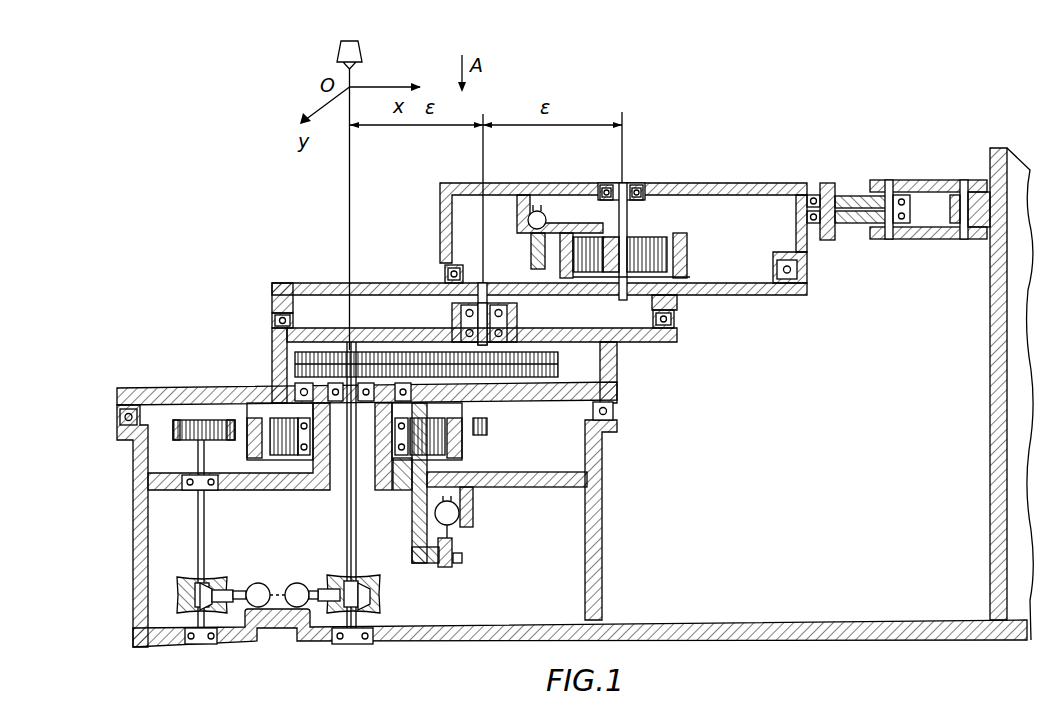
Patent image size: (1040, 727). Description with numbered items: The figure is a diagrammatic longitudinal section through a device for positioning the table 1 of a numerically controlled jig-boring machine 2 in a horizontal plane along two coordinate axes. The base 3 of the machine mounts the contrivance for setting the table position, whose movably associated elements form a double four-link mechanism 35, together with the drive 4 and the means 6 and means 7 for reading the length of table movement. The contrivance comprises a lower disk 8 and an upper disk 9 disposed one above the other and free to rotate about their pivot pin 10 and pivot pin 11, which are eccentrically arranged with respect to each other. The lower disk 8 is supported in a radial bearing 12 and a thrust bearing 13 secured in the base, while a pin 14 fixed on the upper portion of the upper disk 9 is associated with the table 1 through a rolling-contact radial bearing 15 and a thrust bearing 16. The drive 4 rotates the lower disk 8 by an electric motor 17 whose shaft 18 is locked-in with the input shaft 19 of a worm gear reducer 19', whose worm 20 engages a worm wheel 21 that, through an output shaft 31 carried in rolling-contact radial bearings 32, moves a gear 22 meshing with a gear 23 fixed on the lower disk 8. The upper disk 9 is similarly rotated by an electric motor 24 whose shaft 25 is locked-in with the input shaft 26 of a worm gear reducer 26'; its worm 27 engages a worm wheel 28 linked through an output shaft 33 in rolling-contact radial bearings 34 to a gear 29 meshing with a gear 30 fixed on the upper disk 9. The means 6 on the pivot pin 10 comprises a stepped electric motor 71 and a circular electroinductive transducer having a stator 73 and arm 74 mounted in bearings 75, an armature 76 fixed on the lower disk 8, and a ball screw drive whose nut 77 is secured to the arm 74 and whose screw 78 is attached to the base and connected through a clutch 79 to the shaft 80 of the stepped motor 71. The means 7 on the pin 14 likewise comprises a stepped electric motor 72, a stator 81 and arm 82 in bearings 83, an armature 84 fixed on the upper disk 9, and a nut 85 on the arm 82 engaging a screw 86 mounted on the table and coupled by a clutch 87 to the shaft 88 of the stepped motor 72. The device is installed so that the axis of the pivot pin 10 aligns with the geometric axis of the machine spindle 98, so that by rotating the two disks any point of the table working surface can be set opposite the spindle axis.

The table 1 is at (440, 191).
The jig-boring machine 2 is at (135, 647).
The base 3 is at (1012, 640).
The drive 4 is at (234, 616).
The means for reading the length of table movement 6 is at (264, 433).
The means for reading the length of table movement 7 is at (592, 232).
The lower disk 8 is at (135, 395).
The upper disk 9 is at (283, 283).
The pivot pin 10 is at (322, 490).
The pivot pin 11 is at (452, 313).
The radial bearing 12 is at (299, 390).
The thrust bearing 13 is at (120, 414).
The pin 14 is at (628, 222).
The rolling-contact radial bearing 15 is at (636, 184).
The thrust bearing 16 is at (445, 274).
The electric motor 17 is at (297, 583).
The shaft 18 is at (262, 583).
The input shaft 19 is at (241, 568).
The worm gear reducer 19' is at (233, 556).
The worm 20 is at (178, 597).
The worm wheel 21 is at (195, 580).
The gear 22 is at (183, 420).
The gear 23 is at (230, 420).
The electric motor 24 is at (290, 612).
The shaft 25 is at (300, 612).
The input shaft 26 is at (350, 574).
The worm gear reducer 26' is at (390, 553).
The worm 27 is at (380, 588).
The worm wheel 28 is at (379, 600).
The gear 29 is at (329, 358).
The gear 30 is at (558, 363).
The output shaft 31 is at (198, 514).
The rolling-contact radial bearings 32 is at (190, 475).
The output shaft 33 is at (350, 513).
The rolling-contact radial bearings 34 is at (349, 342).
The double four-link mechanism 35 is at (878, 183).
The stepped electric motor 71 is at (460, 513).
The stepped electric motor 72 is at (538, 195).
The stator 73 is at (458, 450).
The arm 74 is at (425, 565).
The bearings 75 is at (384, 490).
The armature 76 is at (488, 427).
The nut 77 is at (462, 560).
The screw 78 is at (458, 565).
The clutch 79 is at (450, 532).
The shaft 80 is at (455, 555).
The stator 81 is at (665, 250).
The arm 82 is at (578, 236).
The bearings 83 is at (641, 296).
The armature 84 is at (688, 253).
The nut 85 is at (531, 257).
The screw 86 is at (526, 237).
The clutch 87 is at (544, 290).
The shaft 88 is at (528, 222).
The machine spindle 98 is at (337, 52).